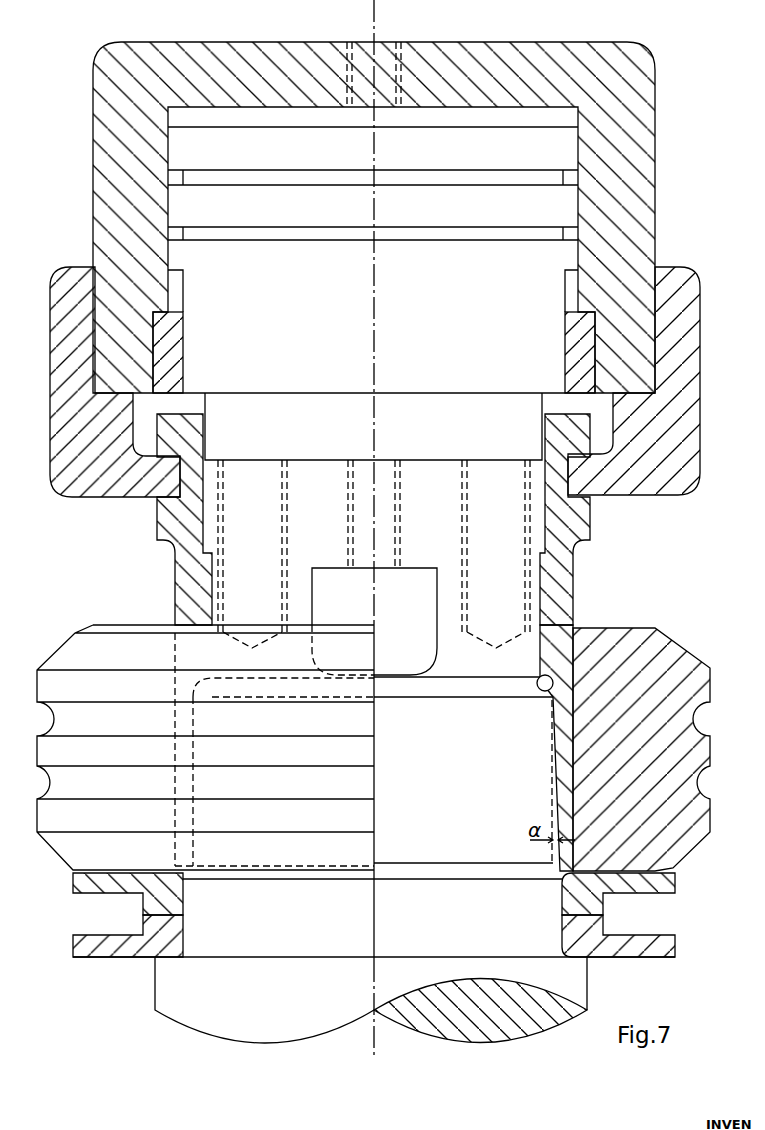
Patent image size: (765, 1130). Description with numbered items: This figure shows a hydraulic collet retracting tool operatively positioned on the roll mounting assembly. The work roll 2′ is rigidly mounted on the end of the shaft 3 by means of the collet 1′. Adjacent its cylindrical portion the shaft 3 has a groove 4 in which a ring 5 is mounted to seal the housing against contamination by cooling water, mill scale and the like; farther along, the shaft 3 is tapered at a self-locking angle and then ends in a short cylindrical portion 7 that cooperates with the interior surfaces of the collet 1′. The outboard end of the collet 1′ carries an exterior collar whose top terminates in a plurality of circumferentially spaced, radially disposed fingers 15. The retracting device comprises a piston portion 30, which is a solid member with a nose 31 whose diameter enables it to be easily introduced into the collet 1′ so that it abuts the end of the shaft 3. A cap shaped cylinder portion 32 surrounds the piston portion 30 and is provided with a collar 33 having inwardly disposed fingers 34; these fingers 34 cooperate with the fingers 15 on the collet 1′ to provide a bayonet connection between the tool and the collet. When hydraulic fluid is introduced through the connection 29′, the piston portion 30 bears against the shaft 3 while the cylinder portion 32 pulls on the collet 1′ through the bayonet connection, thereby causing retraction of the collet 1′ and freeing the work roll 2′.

The collet 1′ is at (190, 540).
The work roll 2′ is at (62, 848).
The shaft 3 is at (236, 993).
The groove 4 is at (230, 908).
The ring 5 is at (100, 950).
The short cylindrical portion 7 is at (297, 578).
The fingers 15 is at (578, 437).
The connection 29′ is at (393, 43).
The piston portion 30 is at (477, 258).
The nose 31 is at (493, 425).
The cap shaped cylinder portion 32 is at (537, 67).
The collar 33 is at (67, 265).
The inwardly disposed fingers 34 is at (577, 477).